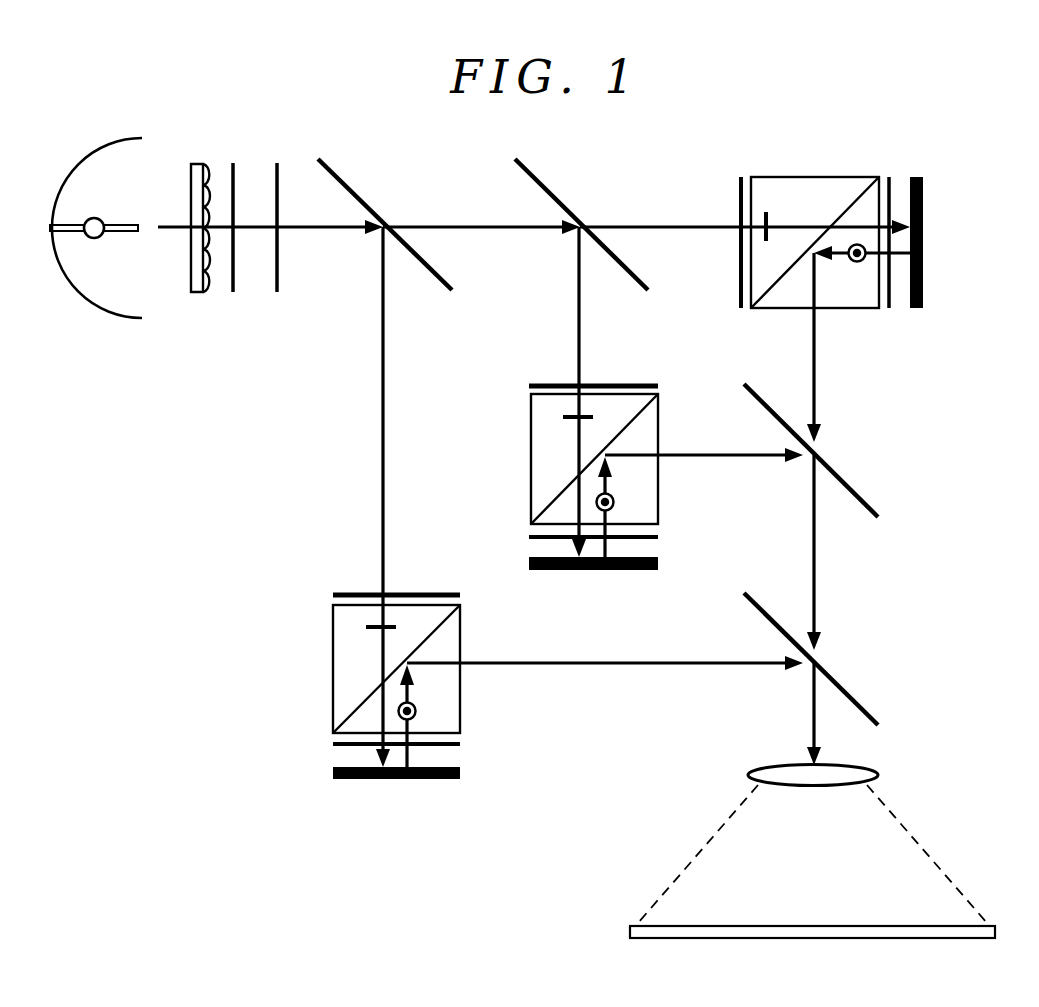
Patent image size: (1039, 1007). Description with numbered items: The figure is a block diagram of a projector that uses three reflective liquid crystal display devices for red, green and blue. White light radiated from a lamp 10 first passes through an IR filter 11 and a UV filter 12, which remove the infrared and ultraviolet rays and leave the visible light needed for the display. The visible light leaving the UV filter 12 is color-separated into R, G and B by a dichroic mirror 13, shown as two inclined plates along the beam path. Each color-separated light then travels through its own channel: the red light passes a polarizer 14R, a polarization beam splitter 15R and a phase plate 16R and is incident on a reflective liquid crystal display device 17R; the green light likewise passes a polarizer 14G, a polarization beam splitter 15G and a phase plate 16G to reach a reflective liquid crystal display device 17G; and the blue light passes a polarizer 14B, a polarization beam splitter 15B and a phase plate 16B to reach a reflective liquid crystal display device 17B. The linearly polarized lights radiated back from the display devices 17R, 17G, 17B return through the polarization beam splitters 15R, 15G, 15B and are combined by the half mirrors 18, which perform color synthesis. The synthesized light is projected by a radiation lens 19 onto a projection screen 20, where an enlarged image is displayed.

The lamp 10 is at (103, 313).
The IR filter 11 is at (233, 292).
The UV filter 12 is at (277, 292).
The dichroic mirror 13 is at (338, 177).
The polarizer 14R is at (740, 177).
The polarization beam splitter 15R is at (825, 177).
The phase plate 16R is at (888, 177).
The reflective liquid crystal display device 17R is at (923, 243).
The polarizer 14G is at (548, 383).
The polarization beam splitter 15G is at (531, 425).
The phase plate 16G is at (529, 537).
The reflective liquid crystal display device 17G is at (658, 563).
The polarizer 14B is at (348, 592).
The polarization beam splitter 15B is at (333, 658).
The phase plate 16B is at (333, 744).
The reflective liquid crystal display device 17B is at (460, 770).
The half mirror 18 is at (865, 497).
The radiation lens 19 is at (878, 773).
The projection screen 20 is at (877, 926).